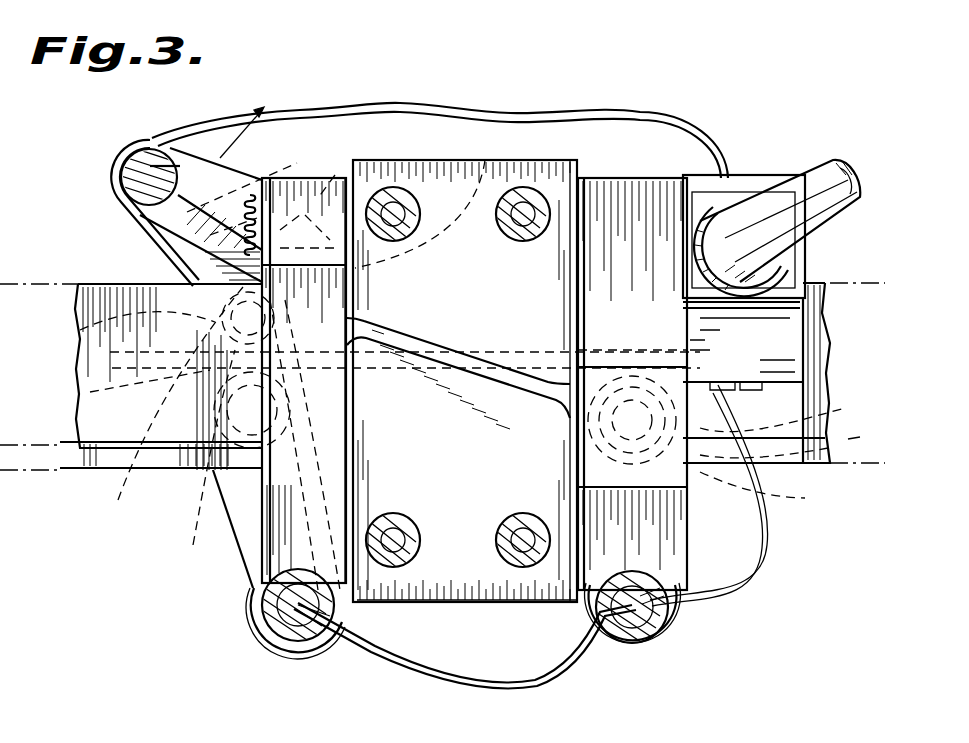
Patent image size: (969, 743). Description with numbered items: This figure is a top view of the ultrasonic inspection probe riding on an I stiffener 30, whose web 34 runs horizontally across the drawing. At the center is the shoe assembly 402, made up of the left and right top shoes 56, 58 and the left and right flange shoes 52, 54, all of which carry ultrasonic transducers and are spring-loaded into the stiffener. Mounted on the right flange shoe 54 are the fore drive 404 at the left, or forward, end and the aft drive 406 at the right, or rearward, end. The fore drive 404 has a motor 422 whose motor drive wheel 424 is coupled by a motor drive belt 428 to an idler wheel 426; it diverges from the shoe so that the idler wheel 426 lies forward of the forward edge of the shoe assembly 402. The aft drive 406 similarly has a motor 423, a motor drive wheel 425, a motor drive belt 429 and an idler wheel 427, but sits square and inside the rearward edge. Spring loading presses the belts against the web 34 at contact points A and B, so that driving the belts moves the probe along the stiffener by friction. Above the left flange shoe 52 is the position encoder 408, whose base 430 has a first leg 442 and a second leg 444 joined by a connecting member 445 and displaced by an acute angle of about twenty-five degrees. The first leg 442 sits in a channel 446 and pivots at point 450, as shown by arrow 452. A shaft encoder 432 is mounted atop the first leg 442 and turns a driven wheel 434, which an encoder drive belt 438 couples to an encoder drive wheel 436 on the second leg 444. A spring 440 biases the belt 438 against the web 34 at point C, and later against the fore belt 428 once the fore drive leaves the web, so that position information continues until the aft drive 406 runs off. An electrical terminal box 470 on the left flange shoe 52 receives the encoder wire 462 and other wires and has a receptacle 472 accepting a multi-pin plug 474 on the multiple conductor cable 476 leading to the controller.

The I stiffener 30 is at (58, 478).
The web 34 is at (79, 398).
The left flange shoe 52 is at (628, 198).
The right flange shoe 54 is at (334, 402).
The left top shoe 56 is at (488, 307).
The right top shoe 58 is at (484, 507).
The shoe assembly 402 is at (431, 147).
The fore drive 404 is at (303, 650).
The aft drive 406 is at (628, 655).
The position encoder 408 is at (205, 158).
The motor 422 is at (312, 622).
The motor 423 is at (657, 632).
The motor drive wheel 424 is at (353, 632).
The motor drive wheel 425 is at (668, 618).
The idler wheel 426 is at (254, 445).
The idler wheel 427 is at (773, 492).
The motor drive belt 428 is at (250, 585).
The motor drive belt 429 is at (738, 604).
The base 430 is at (135, 262).
The shaft encoder 432 is at (160, 156).
The driven wheel 434 is at (120, 170).
The encoder drive wheel 436 is at (80, 332).
The encoder drive belt 438 is at (187, 281).
The spring 440 is at (323, 172).
The first leg 442 is at (262, 146).
The second leg 444 is at (160, 240).
The connecting member 445 is at (242, 184).
The channel 446 is at (318, 188).
The pivot point 450 is at (430, 200).
The arrow 452 is at (226, 157).
The wire 462 is at (670, 113).
The electrical terminal box 470 is at (762, 359).
The receptacle 472 is at (787, 270).
The multi-pin plug 474 is at (720, 206).
The multiple conductor cable 476 is at (803, 184).
The point of contact A is at (196, 447).
The point of contact B is at (784, 373).
The point of contact C is at (170, 406).